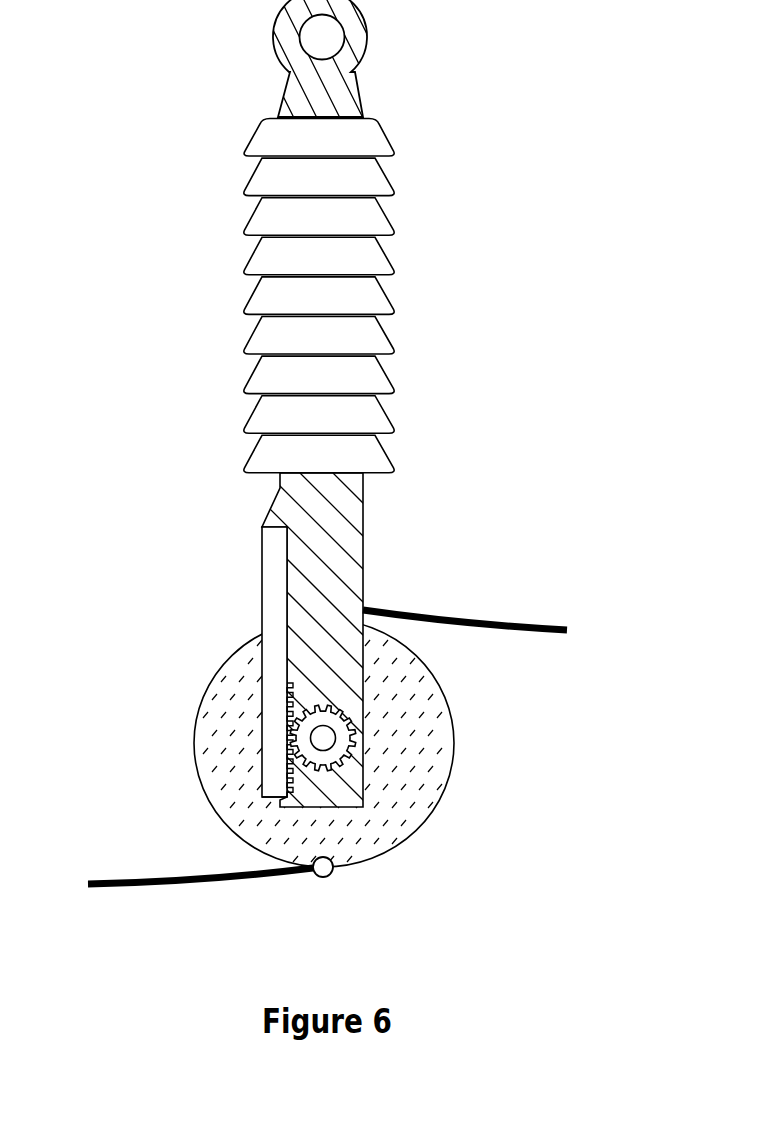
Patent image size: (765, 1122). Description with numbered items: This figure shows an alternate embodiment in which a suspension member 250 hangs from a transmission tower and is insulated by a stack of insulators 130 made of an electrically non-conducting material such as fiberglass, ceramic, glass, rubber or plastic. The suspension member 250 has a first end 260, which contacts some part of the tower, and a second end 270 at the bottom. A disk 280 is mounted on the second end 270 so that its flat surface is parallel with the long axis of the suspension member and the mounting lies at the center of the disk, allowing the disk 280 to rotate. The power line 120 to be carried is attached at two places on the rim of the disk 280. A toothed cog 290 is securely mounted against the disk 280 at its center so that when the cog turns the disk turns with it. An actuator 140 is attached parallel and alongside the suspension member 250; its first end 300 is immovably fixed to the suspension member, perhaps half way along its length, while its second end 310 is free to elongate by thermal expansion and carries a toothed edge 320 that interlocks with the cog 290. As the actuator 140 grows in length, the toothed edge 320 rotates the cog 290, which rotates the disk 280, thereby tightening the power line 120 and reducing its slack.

The power line 120 is at (527, 620).
The insulators 130 is at (388, 290).
The actuator 140 is at (268, 584).
The suspension member 250 is at (223, 333).
The first end 260 is at (365, 45).
The second end 270 is at (362, 806).
The disk 280 is at (443, 797).
The toothed cog 290 is at (355, 740).
The first end 300 is at (260, 528).
The second end 310 is at (265, 797).
The toothed edge 320 is at (272, 713).